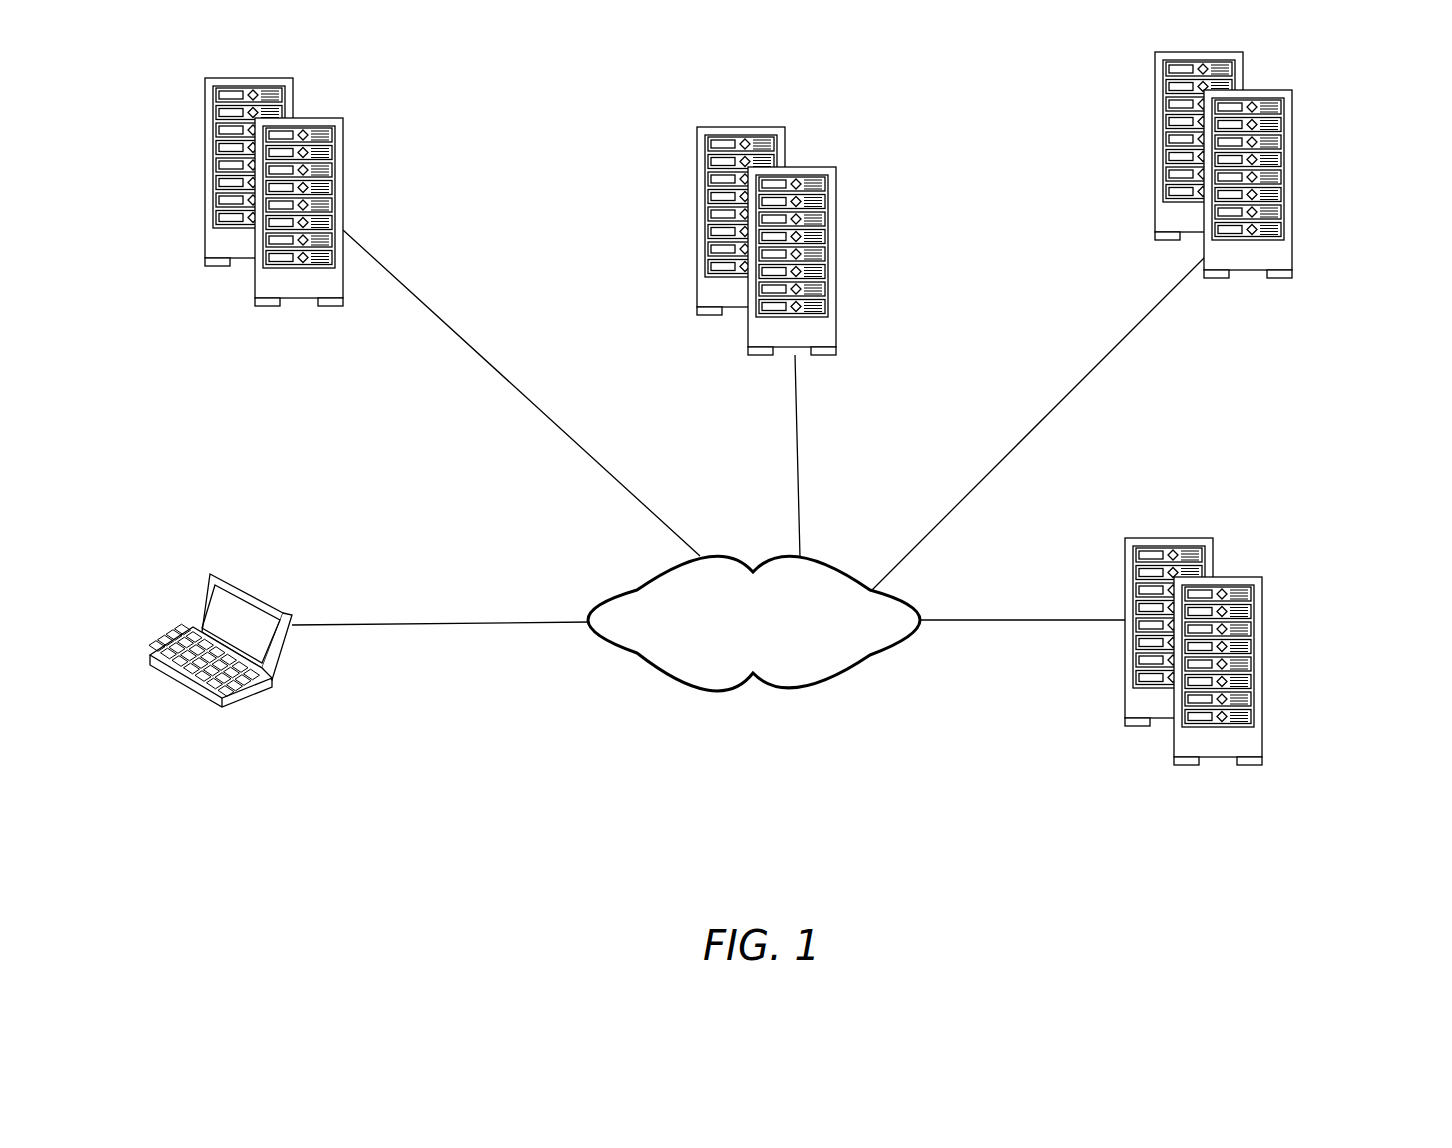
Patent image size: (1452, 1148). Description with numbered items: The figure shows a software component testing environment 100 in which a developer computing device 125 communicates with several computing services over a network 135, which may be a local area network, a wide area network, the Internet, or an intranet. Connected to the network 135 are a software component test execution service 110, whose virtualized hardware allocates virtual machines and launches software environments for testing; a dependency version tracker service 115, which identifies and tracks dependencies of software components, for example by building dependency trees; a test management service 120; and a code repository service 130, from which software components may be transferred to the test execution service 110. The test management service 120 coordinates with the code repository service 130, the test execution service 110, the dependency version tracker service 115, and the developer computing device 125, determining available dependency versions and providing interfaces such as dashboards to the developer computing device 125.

The software component testing environment 100 is at (1345, 80).
The software component test execution service 110 is at (313, 118).
The dependency version tracker service 115 is at (807, 168).
The test management service 120 is at (1293, 178).
The developer computing device 125 is at (258, 597).
The code repository service 130 is at (1173, 538).
The network 135 is at (717, 562).